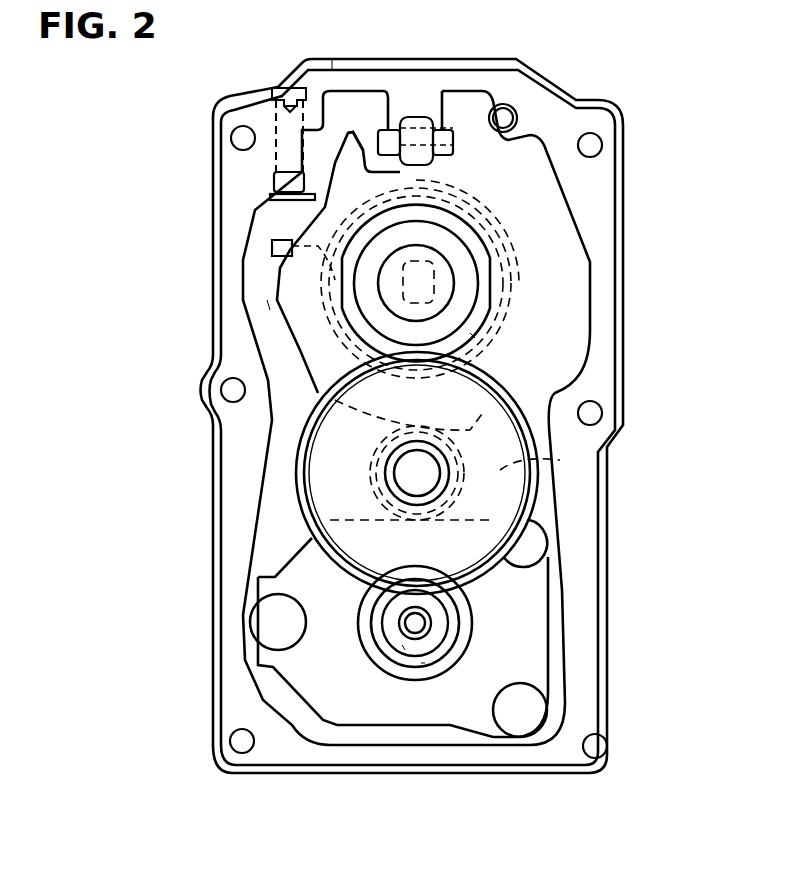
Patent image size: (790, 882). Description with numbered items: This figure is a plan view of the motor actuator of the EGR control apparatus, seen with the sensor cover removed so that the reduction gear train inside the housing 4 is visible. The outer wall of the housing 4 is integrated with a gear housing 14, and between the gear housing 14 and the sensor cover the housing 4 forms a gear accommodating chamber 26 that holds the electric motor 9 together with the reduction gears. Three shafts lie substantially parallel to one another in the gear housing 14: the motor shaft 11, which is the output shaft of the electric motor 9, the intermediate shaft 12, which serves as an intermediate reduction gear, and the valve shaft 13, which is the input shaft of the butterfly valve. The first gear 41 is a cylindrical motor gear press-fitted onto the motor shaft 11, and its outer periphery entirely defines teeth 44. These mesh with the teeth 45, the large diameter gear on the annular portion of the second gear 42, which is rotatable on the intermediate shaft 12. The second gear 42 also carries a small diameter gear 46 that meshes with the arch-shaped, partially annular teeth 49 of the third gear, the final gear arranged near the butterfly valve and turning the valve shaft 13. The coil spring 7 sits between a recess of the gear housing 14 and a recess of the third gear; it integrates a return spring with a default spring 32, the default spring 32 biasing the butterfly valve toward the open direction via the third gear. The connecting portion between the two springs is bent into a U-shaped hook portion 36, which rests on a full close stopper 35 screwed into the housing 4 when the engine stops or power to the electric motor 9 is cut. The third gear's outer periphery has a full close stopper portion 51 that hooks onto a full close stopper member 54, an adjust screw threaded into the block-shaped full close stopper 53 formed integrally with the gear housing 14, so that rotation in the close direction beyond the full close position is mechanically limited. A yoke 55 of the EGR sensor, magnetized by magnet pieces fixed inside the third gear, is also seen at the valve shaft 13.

The housing 4 is at (609, 110).
The coil spring 7 is at (482, 262).
The electric motor 9 is at (457, 648).
The motor shaft 11 is at (417, 623).
The intermediate shaft 12 is at (425, 475).
The valve shaft 13 is at (430, 262).
The gear housing 14 is at (400, 78).
The gear accommodating chamber 26 is at (575, 306).
The default spring 32 is at (273, 240).
The full close stopper 35 is at (290, 185).
The U-shaped hook portion 36 is at (325, 200).
The first gear 41 is at (402, 645).
The second gear 42 is at (505, 498).
The teeth 44 is at (421, 663).
The teeth (large diameter gear) 45 is at (490, 582).
The teeth (small diameter gear) 46 is at (372, 494).
The teeth 49 is at (267, 300).
The full close stopper portion 51 is at (352, 140).
The full close stopper 53 is at (378, 128).
The full close stopper member 54 is at (432, 117).
The yoke 55 is at (470, 333).